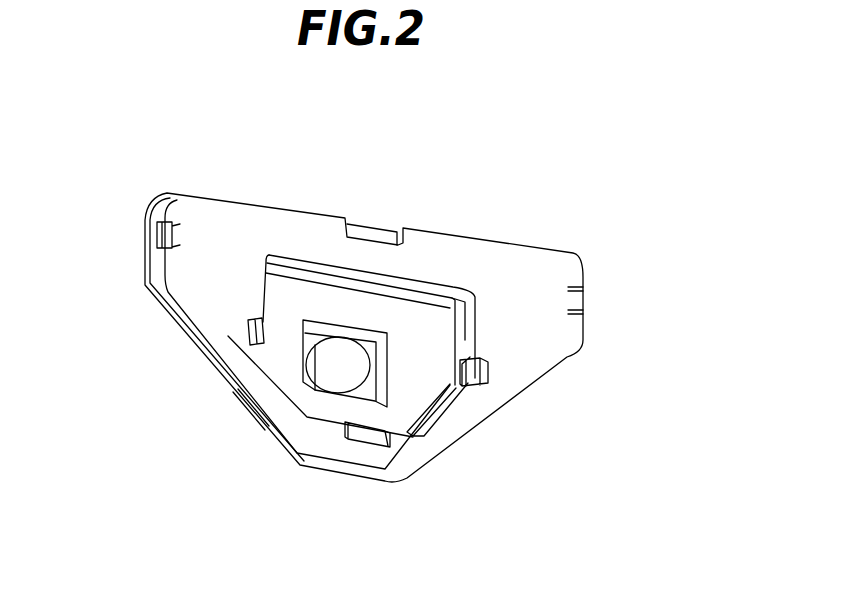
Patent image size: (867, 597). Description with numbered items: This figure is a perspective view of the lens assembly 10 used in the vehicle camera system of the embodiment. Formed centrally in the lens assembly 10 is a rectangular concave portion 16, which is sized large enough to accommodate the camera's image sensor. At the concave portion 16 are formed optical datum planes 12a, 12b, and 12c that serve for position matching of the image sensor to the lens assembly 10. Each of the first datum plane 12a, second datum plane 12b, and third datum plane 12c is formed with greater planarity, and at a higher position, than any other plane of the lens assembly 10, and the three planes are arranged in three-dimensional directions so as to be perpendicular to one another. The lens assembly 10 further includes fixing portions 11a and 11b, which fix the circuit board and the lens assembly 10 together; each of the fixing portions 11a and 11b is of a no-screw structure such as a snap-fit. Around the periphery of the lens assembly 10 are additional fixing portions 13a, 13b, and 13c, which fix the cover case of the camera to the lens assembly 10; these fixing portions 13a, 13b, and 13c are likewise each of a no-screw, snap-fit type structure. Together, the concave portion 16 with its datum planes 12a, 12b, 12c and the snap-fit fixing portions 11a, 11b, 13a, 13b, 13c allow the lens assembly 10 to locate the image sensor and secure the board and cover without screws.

The lens assembly 10 is at (453, 233).
The fixing portion 11a is at (249, 323).
The fixing portion 11b is at (488, 370).
The first datum plane 12a is at (352, 326).
The second datum plane 12b is at (378, 365).
The third datum plane 12c is at (303, 337).
The fixing portion 13a is at (176, 222).
The fixing portion 13b is at (583, 300).
The fixing portion 13c is at (367, 445).
The concave portion 16 is at (343, 368).